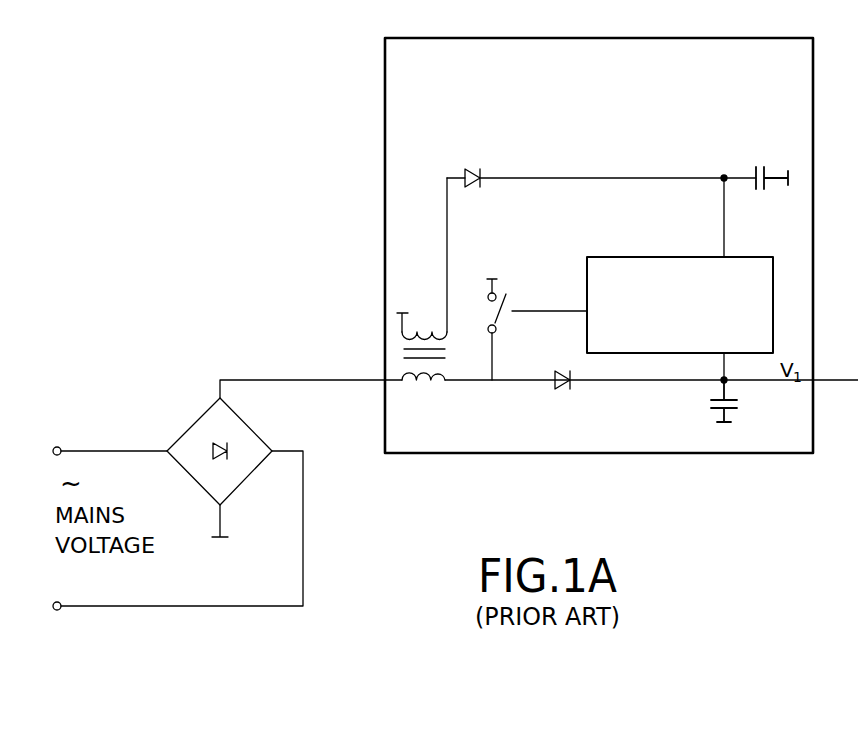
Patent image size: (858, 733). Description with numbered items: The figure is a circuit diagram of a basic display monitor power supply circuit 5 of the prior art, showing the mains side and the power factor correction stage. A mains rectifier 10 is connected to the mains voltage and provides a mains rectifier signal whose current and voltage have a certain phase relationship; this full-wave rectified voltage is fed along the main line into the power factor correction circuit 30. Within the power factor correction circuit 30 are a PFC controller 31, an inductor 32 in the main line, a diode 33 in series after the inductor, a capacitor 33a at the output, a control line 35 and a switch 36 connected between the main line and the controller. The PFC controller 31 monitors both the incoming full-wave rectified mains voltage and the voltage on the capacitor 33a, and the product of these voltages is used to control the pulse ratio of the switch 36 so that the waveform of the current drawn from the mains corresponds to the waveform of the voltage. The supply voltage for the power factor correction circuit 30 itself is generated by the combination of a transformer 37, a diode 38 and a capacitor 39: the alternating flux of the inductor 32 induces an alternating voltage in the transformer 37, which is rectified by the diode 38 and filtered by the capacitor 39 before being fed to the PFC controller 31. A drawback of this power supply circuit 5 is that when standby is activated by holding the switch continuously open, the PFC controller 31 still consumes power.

The display monitor power supply circuit 5 is at (175, 268).
The mains rectifier 10 is at (195, 420).
The power factor correction circuit 30 is at (384, 175).
The PFC controller 31 is at (645, 256).
The inductor 32 is at (420, 385).
The diode 33 is at (553, 385).
The capacitor 33a is at (725, 410).
The control line 35 is at (542, 312).
The switch 36 is at (495, 313).
The transformer 37 is at (419, 322).
The diode 38 is at (462, 172).
The capacitor 39 is at (752, 172).